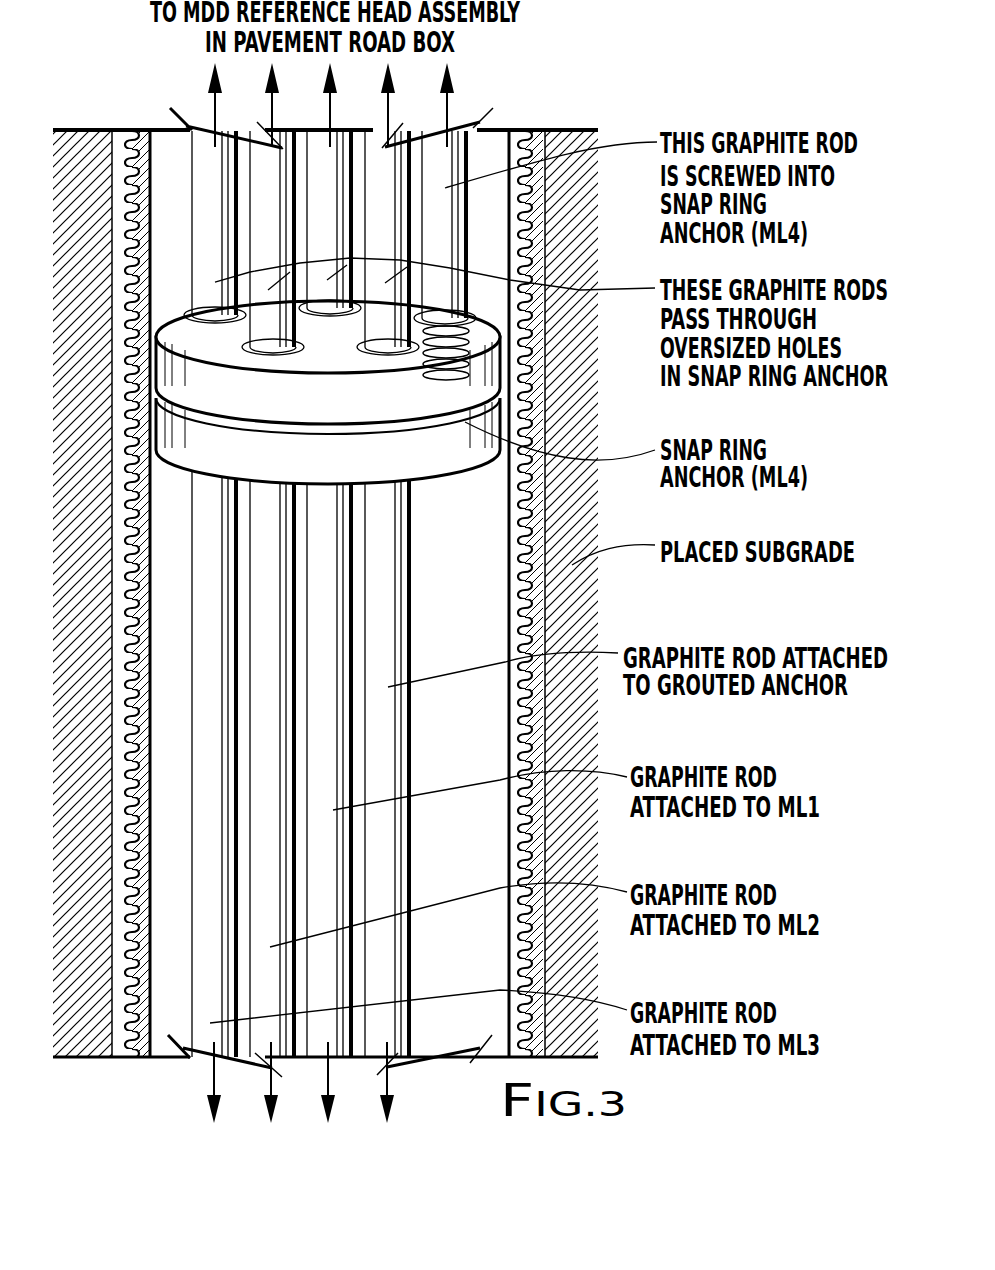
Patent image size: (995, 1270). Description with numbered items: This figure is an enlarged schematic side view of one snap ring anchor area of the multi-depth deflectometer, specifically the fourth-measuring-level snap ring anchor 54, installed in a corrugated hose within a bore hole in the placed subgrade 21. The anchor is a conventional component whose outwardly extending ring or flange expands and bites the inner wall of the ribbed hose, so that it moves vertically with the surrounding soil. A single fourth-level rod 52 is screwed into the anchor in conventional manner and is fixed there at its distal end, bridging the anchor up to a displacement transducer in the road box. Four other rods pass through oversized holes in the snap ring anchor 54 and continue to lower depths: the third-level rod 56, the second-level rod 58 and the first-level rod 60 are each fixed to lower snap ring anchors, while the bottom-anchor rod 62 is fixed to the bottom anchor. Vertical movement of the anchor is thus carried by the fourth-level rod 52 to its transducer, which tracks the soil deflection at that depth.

The placed subgrade 21 is at (573, 527).
The ML-4 rod 52 is at (440, 222).
The ML-4 snap ring anchor 54 is at (490, 378).
The ML-3 rod 56 is at (210, 1000).
The ML-2 rod 58 is at (268, 905).
The ML-1 rod 60 is at (333, 775).
The BA rod 62 is at (388, 647).